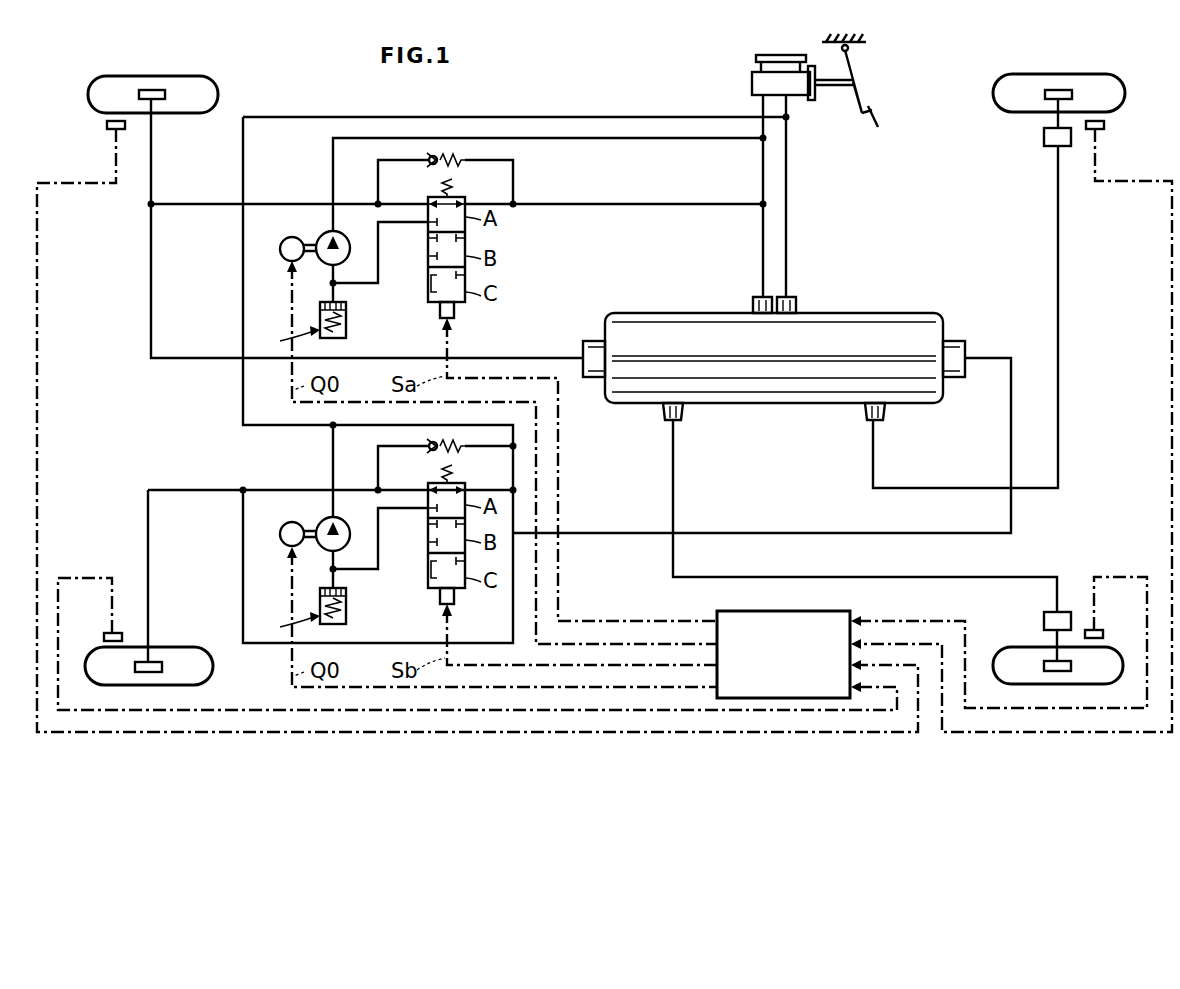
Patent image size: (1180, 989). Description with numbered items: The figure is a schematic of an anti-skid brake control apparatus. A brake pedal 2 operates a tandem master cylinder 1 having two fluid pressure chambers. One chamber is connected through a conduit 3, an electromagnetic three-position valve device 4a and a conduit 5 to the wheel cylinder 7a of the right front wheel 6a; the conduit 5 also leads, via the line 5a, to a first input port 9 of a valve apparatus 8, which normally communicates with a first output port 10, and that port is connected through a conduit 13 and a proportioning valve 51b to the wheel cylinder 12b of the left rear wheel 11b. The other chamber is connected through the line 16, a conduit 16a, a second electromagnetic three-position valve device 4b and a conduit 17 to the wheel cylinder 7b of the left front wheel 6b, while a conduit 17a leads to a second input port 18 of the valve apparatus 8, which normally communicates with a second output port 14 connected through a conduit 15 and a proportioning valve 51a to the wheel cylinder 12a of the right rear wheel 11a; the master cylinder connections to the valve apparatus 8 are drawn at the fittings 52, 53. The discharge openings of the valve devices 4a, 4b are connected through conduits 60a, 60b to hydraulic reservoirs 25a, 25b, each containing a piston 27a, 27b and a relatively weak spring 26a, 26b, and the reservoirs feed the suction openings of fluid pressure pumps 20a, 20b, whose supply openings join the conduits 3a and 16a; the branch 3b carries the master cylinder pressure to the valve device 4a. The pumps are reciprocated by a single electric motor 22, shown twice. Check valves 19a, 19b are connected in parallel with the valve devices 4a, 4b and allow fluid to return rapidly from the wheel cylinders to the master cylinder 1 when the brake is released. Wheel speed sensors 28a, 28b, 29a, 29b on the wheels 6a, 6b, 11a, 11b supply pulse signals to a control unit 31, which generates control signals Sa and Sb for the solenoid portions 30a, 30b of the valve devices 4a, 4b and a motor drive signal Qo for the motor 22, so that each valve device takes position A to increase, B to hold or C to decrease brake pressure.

The tandem master cylinder 1 is at (758, 56).
The brake pedal 2 is at (865, 103).
The conduit 3 is at (763, 177).
The conduit 3a is at (597, 140).
The branch conduit 3b is at (597, 206).
The electromagnetic three-position valve device 4a is at (474, 241).
The electromagnetic three-position valve device 4b is at (474, 528).
The conduit 5 is at (276, 204).
The conduit 5a is at (194, 359).
The right front wheel 6a is at (198, 84).
The left front wheel 6b is at (178, 651).
The wheel cylinder 7a is at (153, 92).
The wheel cylinder 7b is at (152, 663).
The valve apparatus 8 is at (849, 308).
The first input port 9 is at (583, 356).
The first output port 10 is at (674, 422).
The right rear wheel 11a is at (1003, 85).
The left rear wheel 11b is at (996, 665).
The wheel cylinder 12a is at (1057, 91).
The wheel cylinder 12b is at (1057, 672).
The conduit 13 is at (828, 577).
The second output port 14 is at (877, 422).
The conduit 15 is at (1058, 334).
The conduit 16 is at (786, 177).
The conduit 16a is at (243, 405).
The conduit 17 is at (290, 490).
The conduit 17a is at (583, 533).
The second input port 18 is at (965, 346).
The check valve 19a is at (468, 160).
The check valve 19b is at (428, 446).
The fluid pressure pump 20a is at (322, 238).
The fluid pressure pump 20b is at (322, 524).
The electric motor 22 is at (283, 258).
The hydraulic reservoir 25a is at (280, 340).
The hydraulic reservoir 25b is at (280, 626).
The spring 26a is at (346, 329).
The spring 26b is at (346, 615).
The piston 27a is at (292, 309).
The piston 27b is at (292, 595).
The wheel speed sensor 28a is at (107, 126).
The wheel speed sensor 28b is at (107, 633).
The wheel speed sensor 29a is at (1104, 126).
The wheel speed sensor 29b is at (1097, 631).
The solenoid portion 30a is at (455, 312).
The solenoid portion 30b is at (455, 601).
The control unit 31 is at (775, 611).
The proportioning valve 51a is at (1044, 137).
The proportioning valve 51b is at (1044, 621).
The inlet port 52 is at (758, 297).
The inlet port 53 is at (792, 297).
The conduit 60a is at (380, 268).
The conduit 60b is at (380, 548).